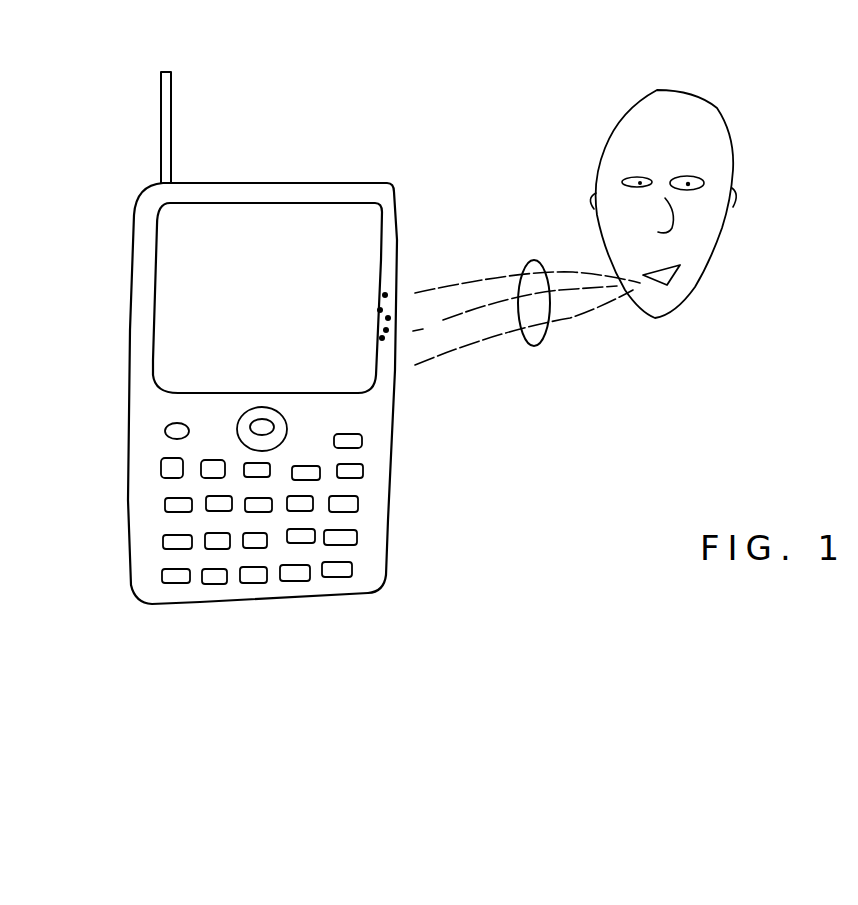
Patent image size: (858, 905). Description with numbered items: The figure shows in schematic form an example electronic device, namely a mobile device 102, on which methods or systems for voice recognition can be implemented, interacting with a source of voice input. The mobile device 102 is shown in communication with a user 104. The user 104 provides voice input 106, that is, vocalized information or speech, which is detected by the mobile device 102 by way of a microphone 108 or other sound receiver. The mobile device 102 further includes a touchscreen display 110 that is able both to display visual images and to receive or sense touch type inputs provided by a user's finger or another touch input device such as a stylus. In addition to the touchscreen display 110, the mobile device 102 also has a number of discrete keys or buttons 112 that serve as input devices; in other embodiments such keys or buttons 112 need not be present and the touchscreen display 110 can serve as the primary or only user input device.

The mobile device 102 is at (274, 184).
The user 104 is at (741, 292).
The voice input 106 is at (538, 346).
The microphone 108 is at (355, 313).
The touchscreen display 110 is at (232, 304).
The keys or buttons 112 is at (227, 415).